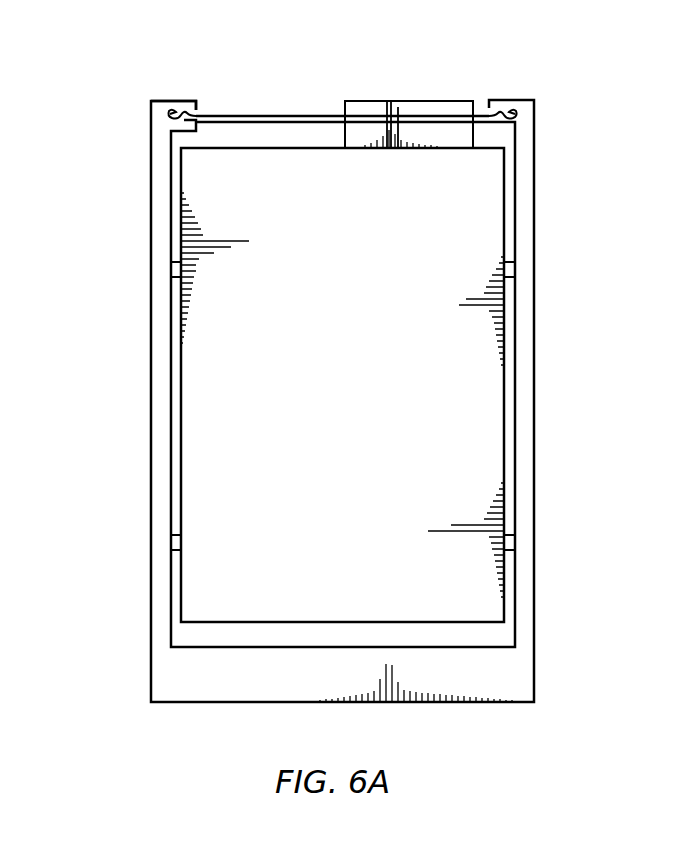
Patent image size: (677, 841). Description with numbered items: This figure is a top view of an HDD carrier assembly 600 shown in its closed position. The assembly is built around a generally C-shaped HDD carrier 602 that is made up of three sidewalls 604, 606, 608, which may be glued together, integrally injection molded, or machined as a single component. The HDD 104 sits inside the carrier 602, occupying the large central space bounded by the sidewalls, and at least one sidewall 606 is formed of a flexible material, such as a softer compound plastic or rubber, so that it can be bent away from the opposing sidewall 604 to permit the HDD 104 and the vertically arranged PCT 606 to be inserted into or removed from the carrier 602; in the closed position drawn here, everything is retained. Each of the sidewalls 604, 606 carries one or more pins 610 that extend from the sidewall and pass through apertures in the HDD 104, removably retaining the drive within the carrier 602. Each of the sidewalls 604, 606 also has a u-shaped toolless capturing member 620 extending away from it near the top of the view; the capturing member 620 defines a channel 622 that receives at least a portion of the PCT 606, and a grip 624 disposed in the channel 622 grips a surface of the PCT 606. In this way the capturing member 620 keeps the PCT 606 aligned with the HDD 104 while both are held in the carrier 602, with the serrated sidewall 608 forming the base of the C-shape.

The HDD carrier assembly 600 is at (271, 37).
The HDD carrier 602 is at (148, 668).
The sidewall 604 is at (151, 316).
The sidewall 606 is at (314, 111).
The sidewall 608 is at (360, 703).
The pin 610 is at (176, 551).
The u-shaped toolless capturing member 620 is at (169, 94).
The channel 622 is at (200, 115).
The grip 624 is at (487, 107).
The HDD 104 is at (358, 440).